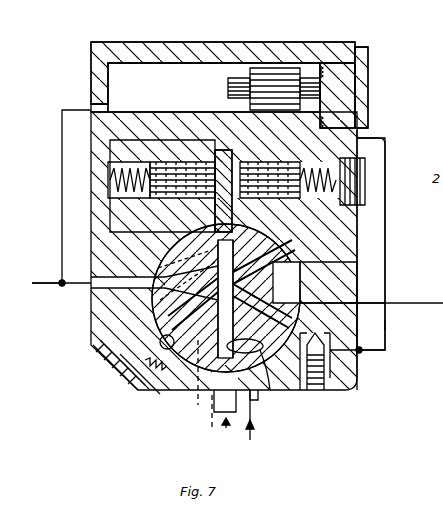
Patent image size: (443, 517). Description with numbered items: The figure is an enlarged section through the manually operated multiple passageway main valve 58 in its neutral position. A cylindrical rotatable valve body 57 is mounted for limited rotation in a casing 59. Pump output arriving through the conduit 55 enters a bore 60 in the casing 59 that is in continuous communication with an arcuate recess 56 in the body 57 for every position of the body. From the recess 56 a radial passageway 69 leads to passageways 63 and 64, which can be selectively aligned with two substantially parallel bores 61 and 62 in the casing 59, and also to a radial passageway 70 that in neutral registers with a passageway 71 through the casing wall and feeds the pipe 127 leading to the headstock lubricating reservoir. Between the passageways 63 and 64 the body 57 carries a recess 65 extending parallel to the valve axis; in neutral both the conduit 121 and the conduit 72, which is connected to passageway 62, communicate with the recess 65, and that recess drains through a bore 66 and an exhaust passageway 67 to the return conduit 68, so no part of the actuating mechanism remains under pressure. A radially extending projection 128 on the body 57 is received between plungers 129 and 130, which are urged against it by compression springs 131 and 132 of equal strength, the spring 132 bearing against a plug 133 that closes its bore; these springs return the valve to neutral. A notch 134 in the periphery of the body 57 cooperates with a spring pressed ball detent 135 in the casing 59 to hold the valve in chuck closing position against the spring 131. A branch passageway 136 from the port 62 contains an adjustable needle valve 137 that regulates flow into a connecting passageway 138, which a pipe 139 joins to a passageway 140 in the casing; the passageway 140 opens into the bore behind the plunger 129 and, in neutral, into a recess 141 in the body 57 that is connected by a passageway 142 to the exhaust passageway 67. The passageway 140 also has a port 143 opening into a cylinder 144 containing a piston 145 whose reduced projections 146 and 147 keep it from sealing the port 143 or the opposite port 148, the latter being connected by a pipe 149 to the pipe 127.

The multiple passageway main valve 58 is at (76, 60).
The port 148 is at (91, 108).
The cylinder 144 is at (250, 62).
The axially extending projection 147 is at (240, 78).
The piston 145 is at (284, 68).
The axially extending projection 146 is at (318, 78).
The port 143 is at (345, 92).
The plunger 130 is at (368, 130).
The passageway 140 is at (221, 114).
The compression spring 131 is at (138, 160).
The plunger 129 is at (170, 160).
The radially extending projection 128 is at (204, 160).
The plug 133 is at (360, 164).
The compression spring 132 is at (356, 184).
The recess 141 is at (162, 246).
The passageway 63 is at (300, 252).
The radial bore or passageway 69 is at (226, 298).
The recess portion 65 is at (290, 278).
The bore or passageway 62 is at (371, 244).
The bore or passageway 61 is at (357, 262).
The conduit 121 is at (385, 260).
The pipe or conduit 72 is at (396, 303).
The branch port or passageway 136 is at (340, 316).
The pipe or conduit 139 is at (388, 326).
The connecting passageway or port 138 is at (360, 352).
The adjustable needle valve 137 is at (318, 392).
The arcuate recess 56 is at (302, 391).
The conduit or pipe 149 is at (62, 200).
The pipe or conduit 127 is at (44, 283).
The bore or passageway 71 is at (88, 283).
The radially extending bore or passageway 70 is at (166, 284).
The casing 59 is at (94, 320).
The notch or recess 134 is at (100, 352).
The spring pressed ball type detent 135 is at (140, 392).
The passageway 142 is at (156, 392).
The rotatable valve body 57 is at (185, 375).
The exhaust passageway 67 is at (198, 413).
The tube or conduit 68 is at (220, 420).
The bore or passageway 60 is at (261, 400).
The pipe or conduit 55 is at (252, 420).
The bore 66 is at (245, 345).
The passageway 64 is at (292, 372).